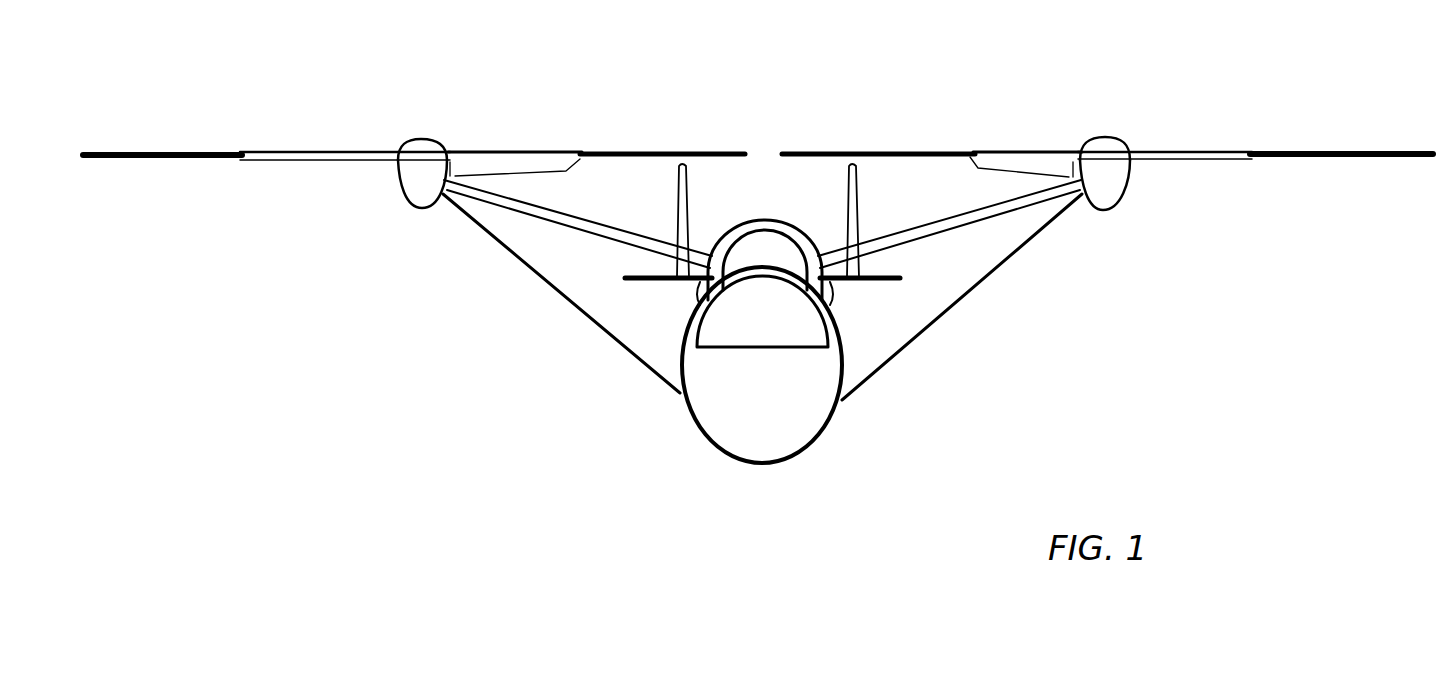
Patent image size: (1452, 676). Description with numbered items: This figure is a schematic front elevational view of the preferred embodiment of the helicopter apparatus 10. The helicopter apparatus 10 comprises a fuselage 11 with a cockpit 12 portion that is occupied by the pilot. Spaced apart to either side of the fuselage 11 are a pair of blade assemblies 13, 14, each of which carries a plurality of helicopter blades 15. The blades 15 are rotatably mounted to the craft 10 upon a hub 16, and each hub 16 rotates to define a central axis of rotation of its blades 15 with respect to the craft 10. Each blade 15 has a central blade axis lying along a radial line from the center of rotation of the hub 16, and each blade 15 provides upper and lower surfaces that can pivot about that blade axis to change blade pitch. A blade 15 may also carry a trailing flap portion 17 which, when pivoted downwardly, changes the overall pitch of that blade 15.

The helicopter apparatus 10 is at (929, 88).
The fuselage 11 is at (798, 452).
The cockpit 12 is at (797, 329).
The blade assembly 13 is at (414, 207).
The blade assembly 14 is at (1113, 195).
The helicopter blade 15 is at (244, 154).
The hub 16 is at (433, 142).
The trailing flap portion 17 is at (520, 167).